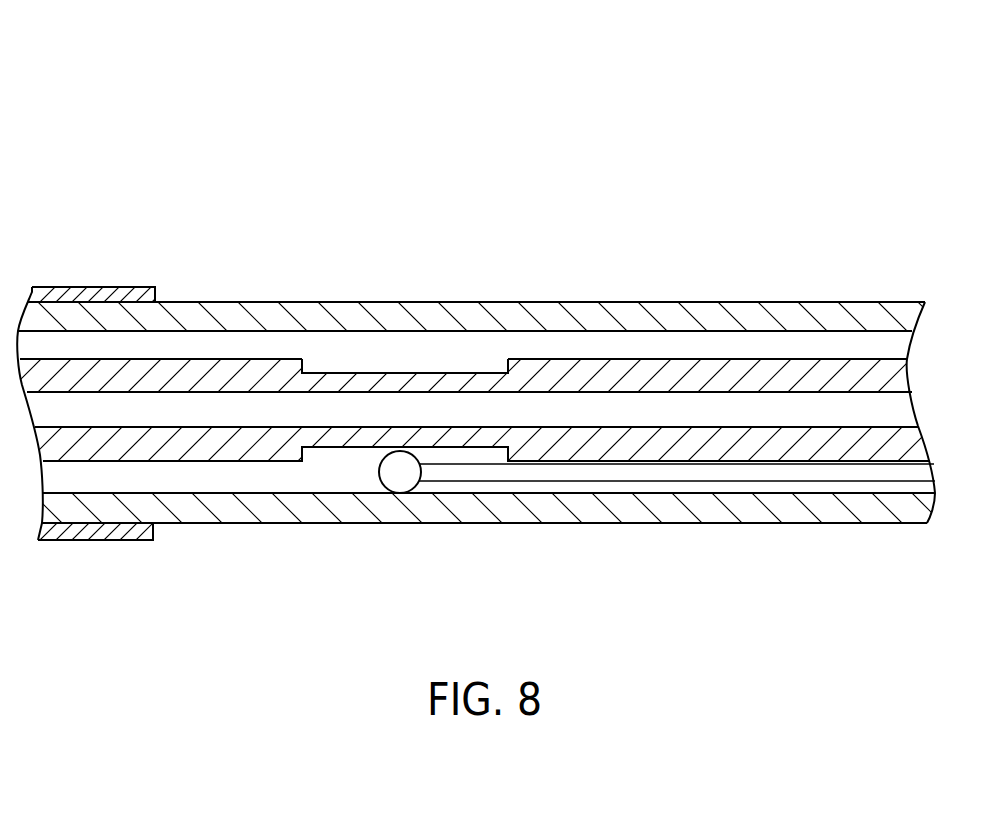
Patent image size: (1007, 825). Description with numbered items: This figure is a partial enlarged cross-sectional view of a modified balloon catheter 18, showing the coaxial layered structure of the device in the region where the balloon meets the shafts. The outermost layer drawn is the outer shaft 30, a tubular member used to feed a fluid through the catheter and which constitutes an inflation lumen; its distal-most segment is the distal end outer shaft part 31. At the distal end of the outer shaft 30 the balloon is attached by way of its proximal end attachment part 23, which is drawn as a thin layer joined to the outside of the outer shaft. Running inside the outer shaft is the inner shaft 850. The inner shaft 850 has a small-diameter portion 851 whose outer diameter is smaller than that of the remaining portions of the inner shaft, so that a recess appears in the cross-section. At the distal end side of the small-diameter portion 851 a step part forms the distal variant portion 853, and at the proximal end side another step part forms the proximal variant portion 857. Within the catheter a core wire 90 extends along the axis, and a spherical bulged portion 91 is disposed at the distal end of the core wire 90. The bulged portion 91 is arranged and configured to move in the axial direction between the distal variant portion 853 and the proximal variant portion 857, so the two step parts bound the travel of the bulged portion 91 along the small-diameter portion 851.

The balloon catheter 18 is at (618, 172).
The proximal end attachment part 23 is at (116, 287).
The outer shaft 30 is at (837, 302).
The distal end outer shaft part 31 is at (855, 524).
The inner shaft 850 is at (711, 358).
The small-diameter portion 851 is at (398, 373).
The distal variant portion 853 is at (305, 359).
The proximal variant portion 857 is at (506, 371).
The core wire 90 is at (692, 474).
The bulged portion 91 is at (400, 480).